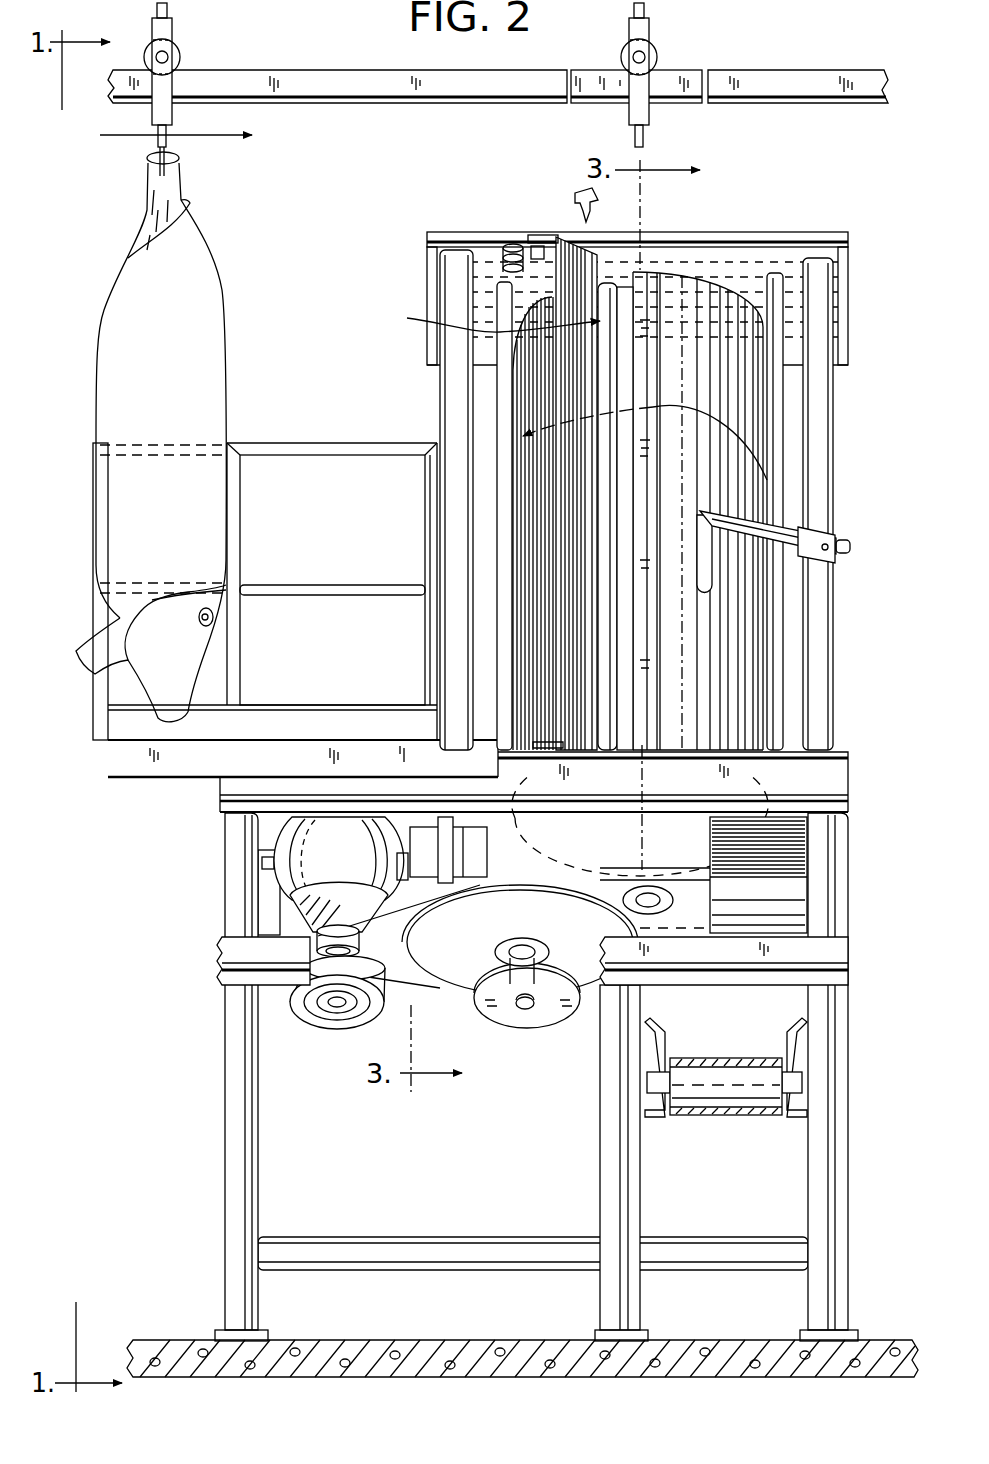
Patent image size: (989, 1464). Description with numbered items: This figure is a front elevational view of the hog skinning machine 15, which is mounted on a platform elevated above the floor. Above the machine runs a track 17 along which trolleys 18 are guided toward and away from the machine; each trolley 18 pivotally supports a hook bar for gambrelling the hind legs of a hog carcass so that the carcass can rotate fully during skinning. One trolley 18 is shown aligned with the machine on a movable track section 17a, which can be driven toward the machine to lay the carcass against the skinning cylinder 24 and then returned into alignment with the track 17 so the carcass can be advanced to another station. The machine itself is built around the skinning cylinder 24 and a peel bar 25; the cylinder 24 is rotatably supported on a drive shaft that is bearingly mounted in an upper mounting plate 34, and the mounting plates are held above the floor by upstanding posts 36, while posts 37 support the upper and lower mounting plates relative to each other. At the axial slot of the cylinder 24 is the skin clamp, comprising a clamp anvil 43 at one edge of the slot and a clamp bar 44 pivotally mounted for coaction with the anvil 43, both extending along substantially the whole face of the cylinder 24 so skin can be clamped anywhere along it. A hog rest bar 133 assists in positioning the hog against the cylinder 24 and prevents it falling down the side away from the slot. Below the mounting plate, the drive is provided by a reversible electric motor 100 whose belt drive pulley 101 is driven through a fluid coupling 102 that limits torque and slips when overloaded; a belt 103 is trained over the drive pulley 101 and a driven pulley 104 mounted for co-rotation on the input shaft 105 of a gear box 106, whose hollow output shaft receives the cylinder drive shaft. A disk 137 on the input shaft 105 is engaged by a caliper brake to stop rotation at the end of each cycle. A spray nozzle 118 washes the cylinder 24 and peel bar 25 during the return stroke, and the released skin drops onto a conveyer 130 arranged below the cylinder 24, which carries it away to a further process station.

The hog skinning machine 15 is at (689, 226).
The track 17 is at (388, 90).
The movable track section 17a is at (699, 72).
The trolley 18 is at (186, 38).
The skinning cylinder 24 is at (704, 296).
The peel bar 25 is at (569, 235).
The upper mounting plate 34 is at (833, 232).
The upstanding posts 36 is at (238, 1161).
The posts 37 is at (440, 415).
The clamp anvil 43 is at (642, 266).
The clamp bar 44 is at (486, 316).
The electric motor 100 is at (298, 850).
The belt drive pulley 101 is at (303, 996).
The fluid coupling 102 is at (345, 1022).
The belt 103 is at (418, 990).
The driven pulley 104 is at (456, 966).
The input shaft 105 is at (540, 966).
The gear box 106 is at (702, 893).
The spray nozzle 118 is at (575, 188).
The conveyer 130 is at (778, 1050).
The hog rest bar 133 is at (776, 521).
The disk 137 is at (548, 1020).